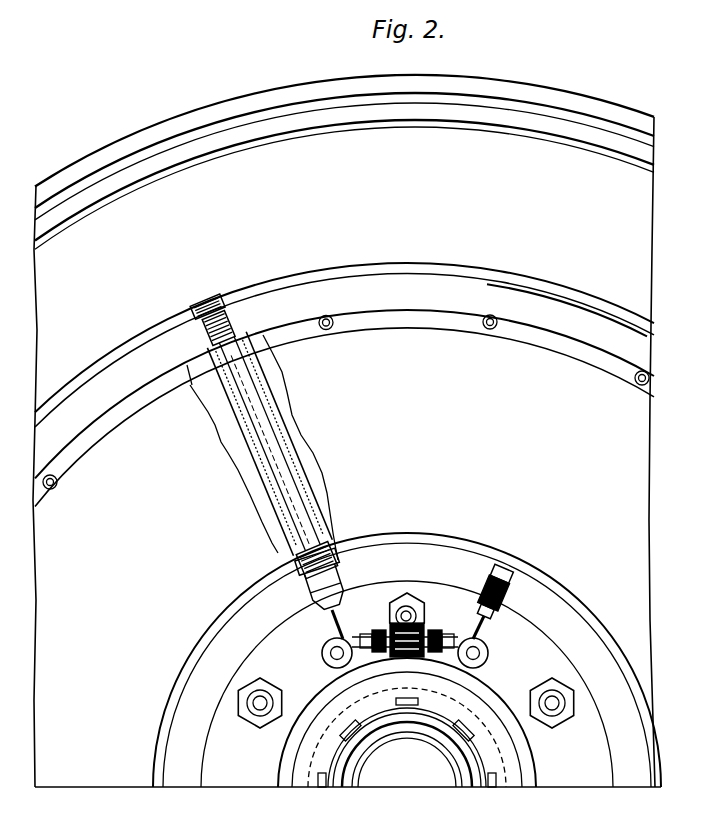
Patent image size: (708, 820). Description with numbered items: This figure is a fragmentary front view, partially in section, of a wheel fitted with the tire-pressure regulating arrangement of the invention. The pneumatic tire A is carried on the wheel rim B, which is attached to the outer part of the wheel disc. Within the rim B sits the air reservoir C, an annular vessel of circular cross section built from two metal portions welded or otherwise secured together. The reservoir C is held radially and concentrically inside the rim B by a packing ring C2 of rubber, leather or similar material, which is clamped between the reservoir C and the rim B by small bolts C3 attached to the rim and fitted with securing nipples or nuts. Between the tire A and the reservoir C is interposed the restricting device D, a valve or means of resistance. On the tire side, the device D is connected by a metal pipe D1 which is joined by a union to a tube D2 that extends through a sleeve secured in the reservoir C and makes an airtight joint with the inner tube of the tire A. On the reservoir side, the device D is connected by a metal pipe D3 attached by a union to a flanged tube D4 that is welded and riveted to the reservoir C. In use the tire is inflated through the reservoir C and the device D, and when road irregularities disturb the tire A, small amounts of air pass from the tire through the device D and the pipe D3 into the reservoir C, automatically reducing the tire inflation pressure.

The pneumatic tire A is at (290, 200).
The wheel rim B is at (236, 298).
The air reservoir C is at (272, 352).
The packing ring C2 is at (95, 437).
The small bolts C3 is at (57, 490).
The restricting device D is at (423, 608).
The metal pipe D1 is at (343, 630).
The tube D2 is at (273, 470).
The metal pipe D3 is at (480, 646).
The flanged tube D4 is at (493, 562).